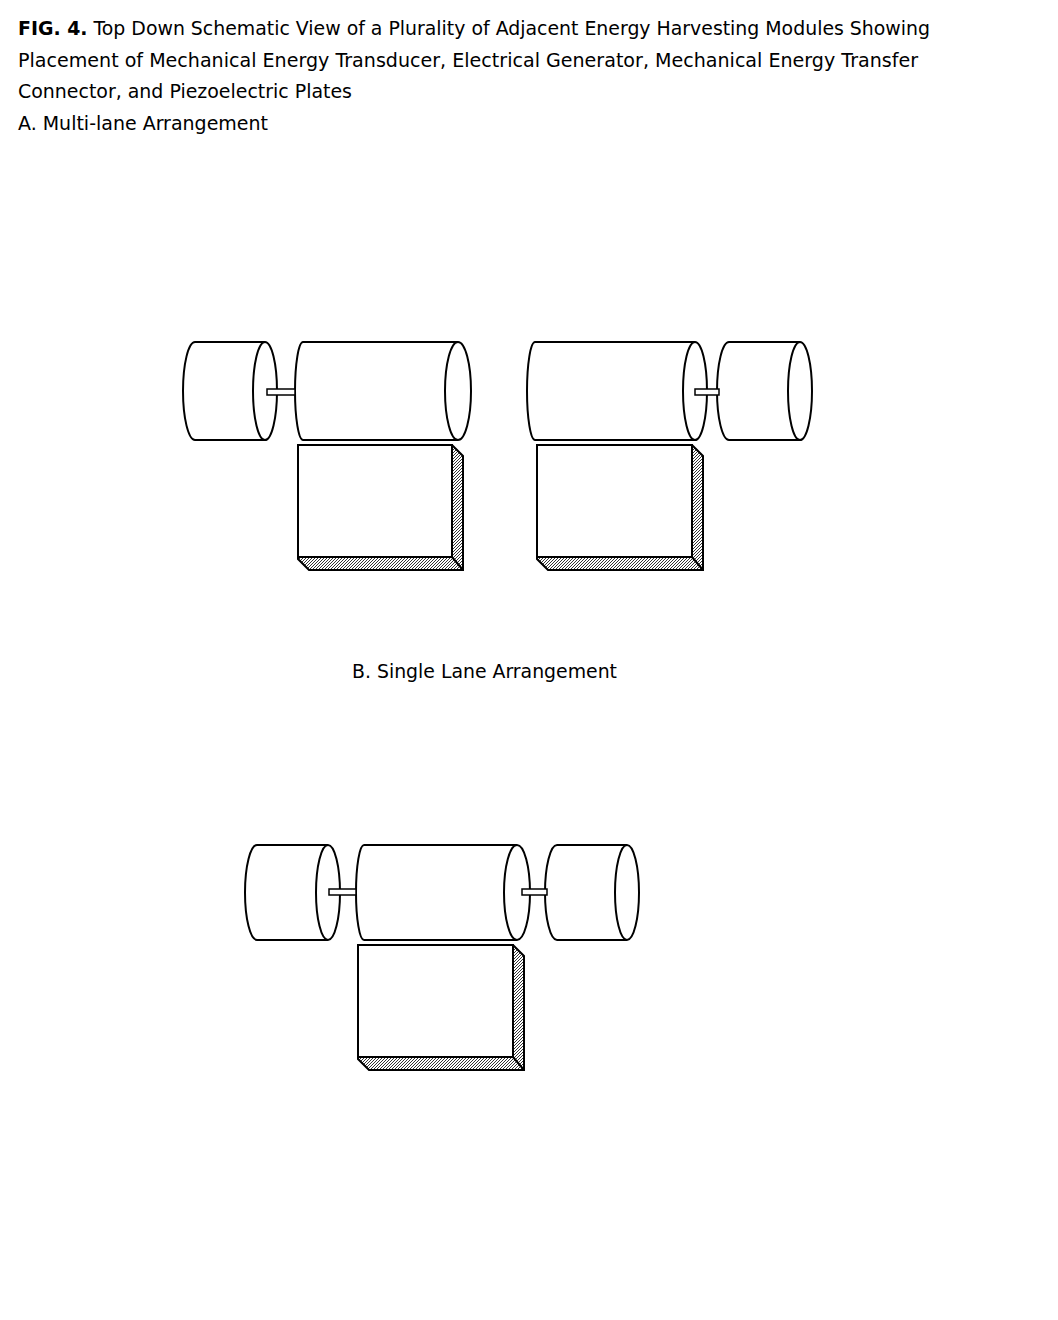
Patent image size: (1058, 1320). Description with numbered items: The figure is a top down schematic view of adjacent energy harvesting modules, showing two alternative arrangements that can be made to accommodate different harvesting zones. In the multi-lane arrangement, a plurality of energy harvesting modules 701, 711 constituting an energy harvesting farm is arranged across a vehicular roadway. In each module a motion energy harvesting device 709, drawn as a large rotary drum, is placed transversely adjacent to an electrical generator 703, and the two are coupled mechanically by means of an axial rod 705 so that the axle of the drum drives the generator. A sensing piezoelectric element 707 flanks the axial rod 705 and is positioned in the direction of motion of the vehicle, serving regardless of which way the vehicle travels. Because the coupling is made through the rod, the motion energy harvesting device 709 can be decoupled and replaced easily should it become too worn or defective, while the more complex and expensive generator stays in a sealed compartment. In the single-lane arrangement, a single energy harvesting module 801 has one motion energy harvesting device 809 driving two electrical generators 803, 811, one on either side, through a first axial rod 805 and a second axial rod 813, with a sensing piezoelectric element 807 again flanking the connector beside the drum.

In FIG. 4A, the energy harvesting module 701 is at (284, 324).
In FIG. 4A, the electrical generator 703 is at (213, 442).
In FIG. 4A, the axial rod 705 is at (280, 393).
In FIG. 4A, the sensing piezoelectric element 707 is at (298, 488).
In FIG. 4A, the motion energy harvesting device 709 is at (392, 343).
In FIG. 4A, the energy harvesting module 711 is at (706, 331).
In FIG. 4B, the energy harvesting module 801 is at (348, 826).
In FIG. 4B, the electrical generator 803 is at (275, 942).
In FIG. 4B, the axial rod 805 is at (342, 895).
In FIG. 4B, the sensing piezoelectric element 807 is at (360, 988).
In FIG. 4B, the motion energy harvesting device 809 is at (453, 845).
In FIG. 4B, the electrical generator 811 is at (597, 942).
In FIG. 4B, the axial rod 813 is at (536, 895).